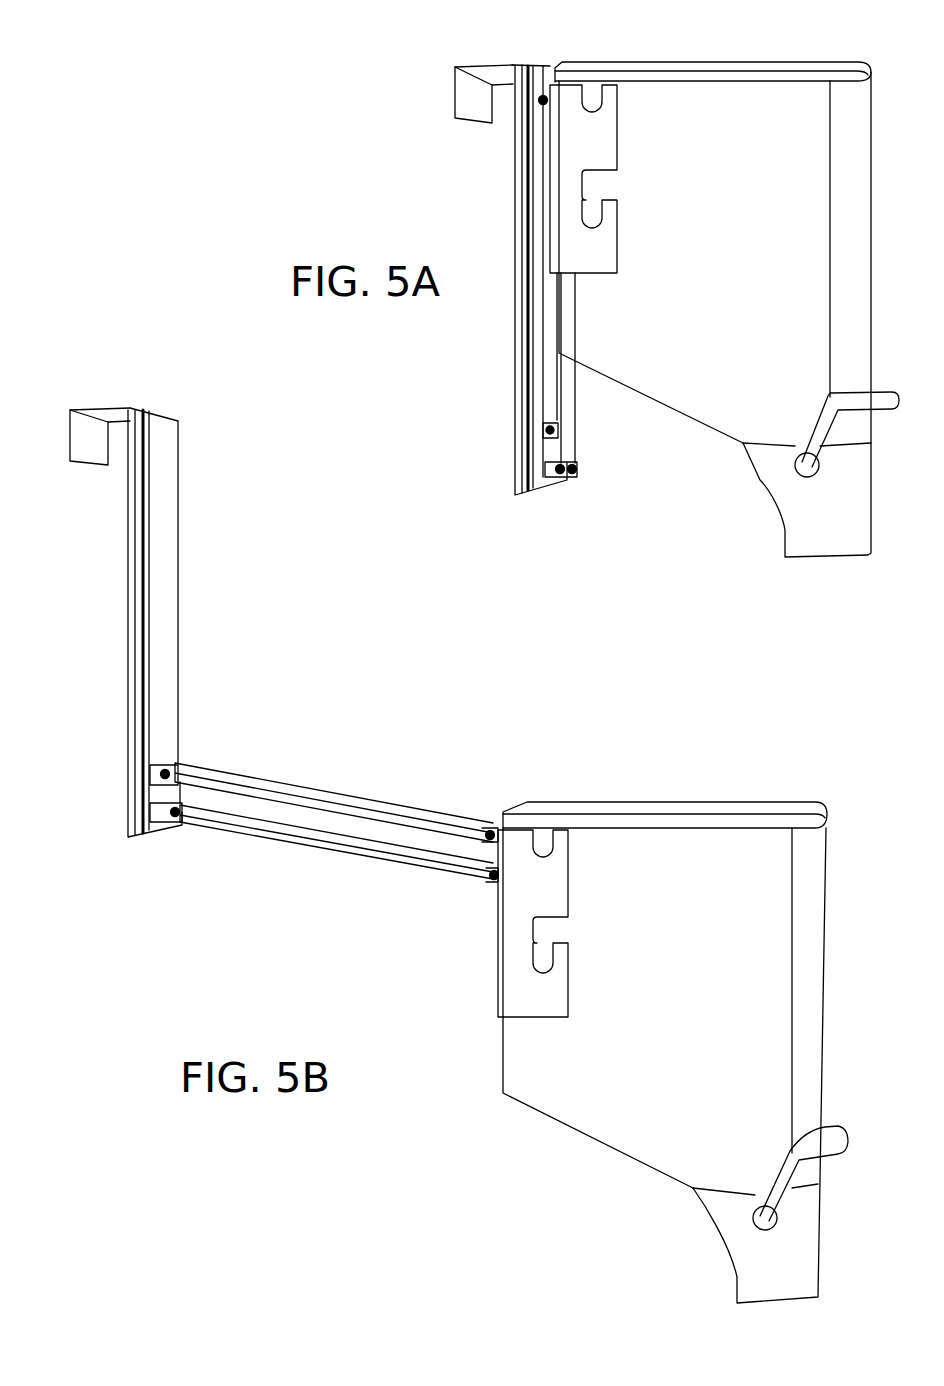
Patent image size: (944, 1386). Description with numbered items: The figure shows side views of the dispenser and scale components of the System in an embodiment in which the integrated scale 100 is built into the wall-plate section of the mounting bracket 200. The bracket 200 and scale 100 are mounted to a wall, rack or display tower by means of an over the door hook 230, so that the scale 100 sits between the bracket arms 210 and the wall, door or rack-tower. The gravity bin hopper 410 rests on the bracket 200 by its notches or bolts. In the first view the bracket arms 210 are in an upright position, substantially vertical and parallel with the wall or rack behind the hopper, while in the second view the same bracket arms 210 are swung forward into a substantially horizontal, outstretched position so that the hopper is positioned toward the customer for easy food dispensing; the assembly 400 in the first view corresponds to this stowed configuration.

In FIG. 5A, the integrated scale 100 is at (526, 418).
In FIG. 5B, the integrated scale 100 is at (165, 583).
In FIG. 5A, the mounting bracket 200 is at (617, 148).
In FIG. 5B, the mounting bracket 200 is at (495, 948).
In FIG. 5A, the bracket arms 210 is at (553, 397).
In FIG. 5B, the bracket arms 210 is at (395, 848).
In FIG. 5A, the over the door hook 230 is at (478, 107).
In FIG. 5B, the over the door hook 230 is at (92, 448).
In FIG. 5A, the storage unit in stowed position 400 is at (715, 455).
In FIG. 5B, the gravity bin hopper 410 is at (576, 1154).